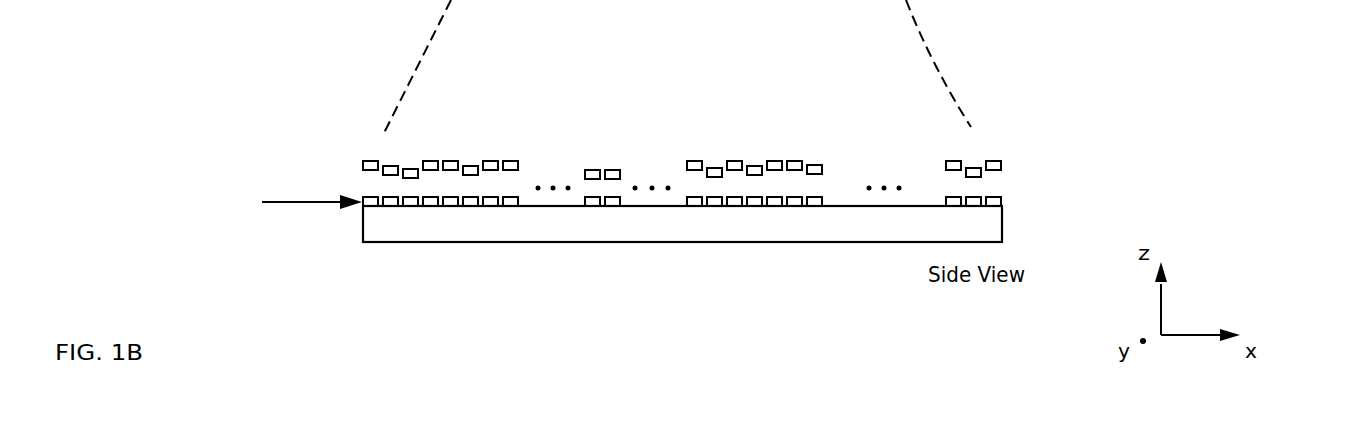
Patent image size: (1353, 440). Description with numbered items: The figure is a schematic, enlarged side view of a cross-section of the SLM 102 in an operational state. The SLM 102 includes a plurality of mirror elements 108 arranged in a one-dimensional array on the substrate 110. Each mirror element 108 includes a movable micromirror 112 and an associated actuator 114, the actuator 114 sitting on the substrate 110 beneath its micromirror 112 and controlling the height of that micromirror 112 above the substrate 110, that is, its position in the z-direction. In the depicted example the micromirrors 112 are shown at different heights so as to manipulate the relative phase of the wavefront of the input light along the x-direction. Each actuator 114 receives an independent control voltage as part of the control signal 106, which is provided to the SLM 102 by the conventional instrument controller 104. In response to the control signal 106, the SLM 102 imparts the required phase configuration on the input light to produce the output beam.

The SLM 102 is at (283, 118).
The instrument controller 104 is at (163, 220).
The control signal 106 is at (325, 203).
The mirror element 108 is at (829, 120).
The substrate 110 is at (510, 234).
The micromirror 112 is at (1048, 155).
The actuator 114 is at (1050, 196).